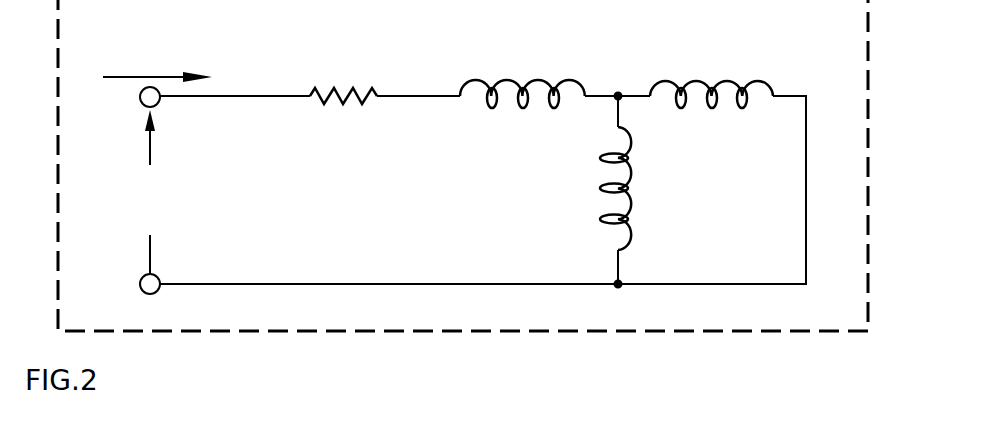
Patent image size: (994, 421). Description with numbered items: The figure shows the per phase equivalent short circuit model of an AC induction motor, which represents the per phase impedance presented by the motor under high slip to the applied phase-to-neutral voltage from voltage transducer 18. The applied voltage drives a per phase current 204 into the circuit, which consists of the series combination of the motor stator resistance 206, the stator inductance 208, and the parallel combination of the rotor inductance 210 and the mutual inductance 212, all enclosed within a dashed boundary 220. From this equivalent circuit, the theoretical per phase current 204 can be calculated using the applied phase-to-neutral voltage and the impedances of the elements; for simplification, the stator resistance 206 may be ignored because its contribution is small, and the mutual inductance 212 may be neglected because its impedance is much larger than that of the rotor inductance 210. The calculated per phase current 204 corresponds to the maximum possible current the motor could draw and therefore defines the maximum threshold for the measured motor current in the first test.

The voltage transducer 18 is at (151, 192).
The per phase current 204 is at (157, 76).
The motor stator resistance 206 is at (323, 106).
The stator inductance 208 is at (494, 108).
The rotor inductance 210 is at (768, 81).
The mutual inductance 212 is at (632, 210).
The motor equivalent circuit model (dashed box) 220 is at (667, 332).